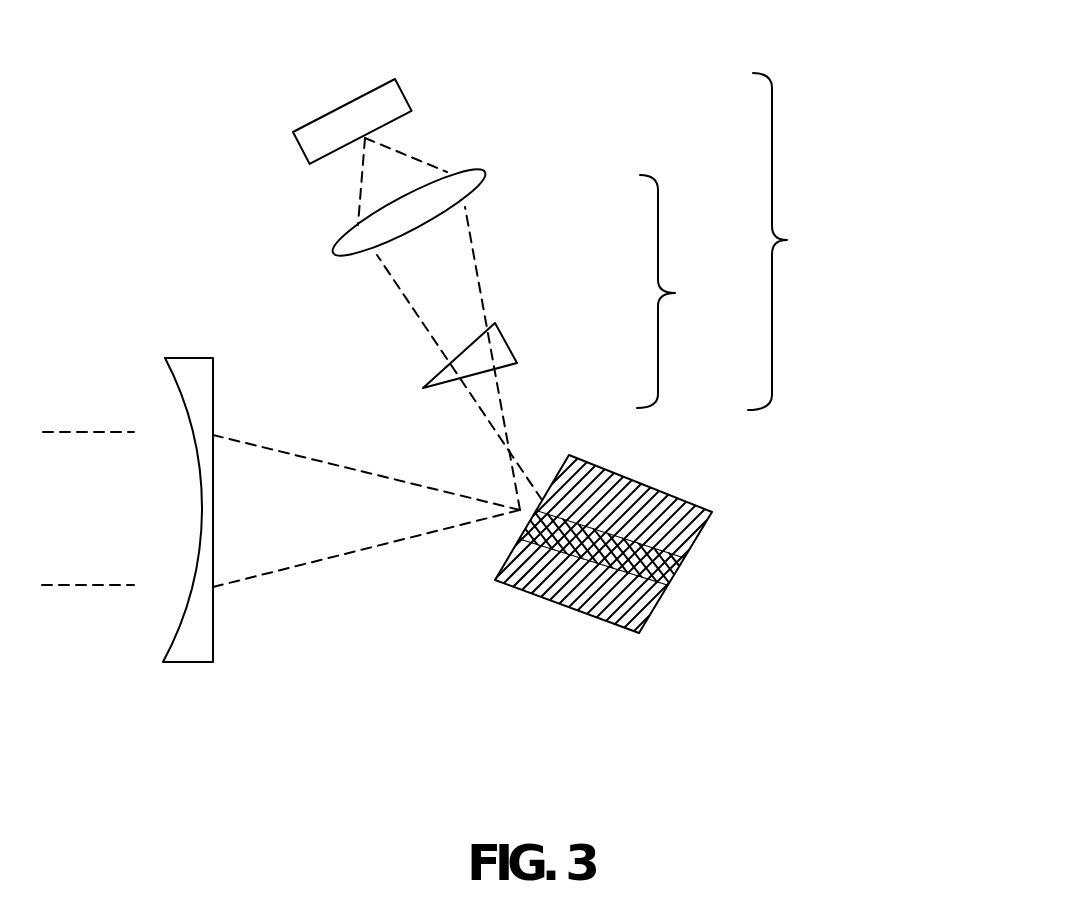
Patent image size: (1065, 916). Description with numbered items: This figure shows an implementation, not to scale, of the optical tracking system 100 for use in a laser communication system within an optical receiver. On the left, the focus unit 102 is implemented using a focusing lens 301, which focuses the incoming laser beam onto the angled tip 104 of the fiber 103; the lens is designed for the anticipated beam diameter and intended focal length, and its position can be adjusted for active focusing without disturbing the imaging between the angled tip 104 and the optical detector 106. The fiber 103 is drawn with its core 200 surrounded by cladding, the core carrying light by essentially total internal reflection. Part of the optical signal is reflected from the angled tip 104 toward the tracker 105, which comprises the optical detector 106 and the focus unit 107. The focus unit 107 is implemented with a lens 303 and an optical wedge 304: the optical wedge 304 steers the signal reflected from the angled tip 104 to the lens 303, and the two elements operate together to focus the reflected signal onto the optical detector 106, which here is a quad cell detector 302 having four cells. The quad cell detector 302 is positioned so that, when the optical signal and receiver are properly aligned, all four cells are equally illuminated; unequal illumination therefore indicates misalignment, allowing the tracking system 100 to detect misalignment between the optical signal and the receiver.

The optical tracking system 100 is at (856, 105).
The focus unit 102 is at (231, 547).
The fiber 103 is at (610, 528).
The angled tip 104 is at (508, 534).
The tracker 105 is at (786, 241).
The optical detector 106 is at (417, 132).
The focus unit 107 is at (675, 291).
The core 200 is at (673, 575).
The focusing lens 301 is at (200, 663).
The quad cell detector 302 is at (396, 81).
The lens 303 is at (477, 193).
The optical wedge 304 is at (507, 340).